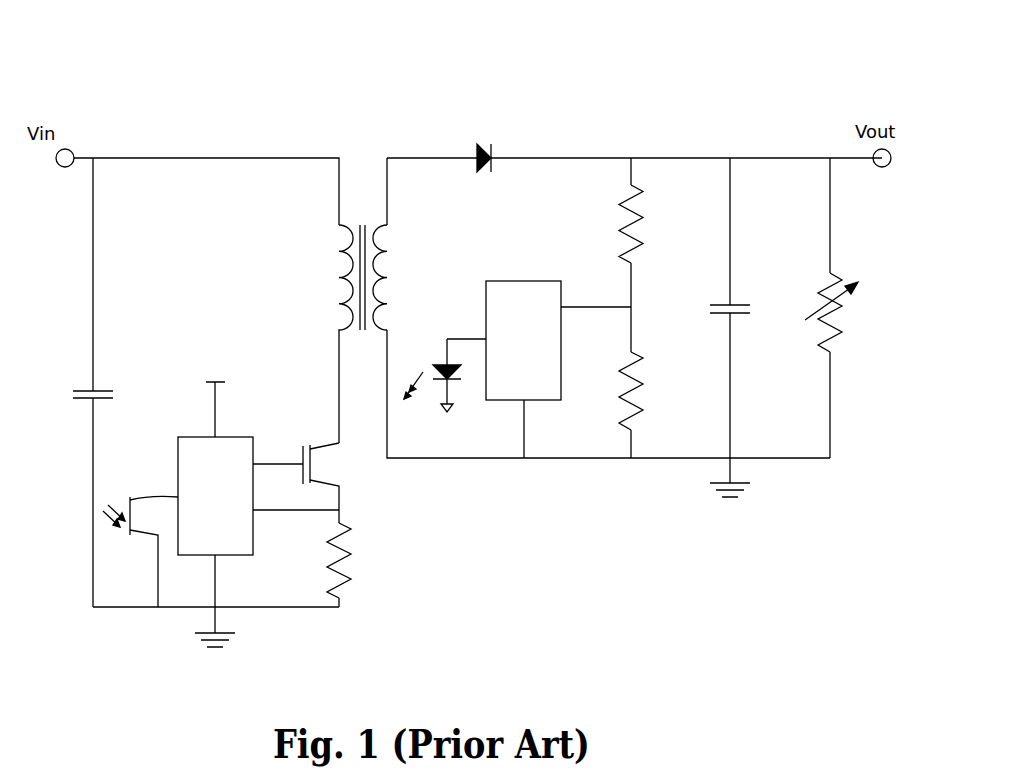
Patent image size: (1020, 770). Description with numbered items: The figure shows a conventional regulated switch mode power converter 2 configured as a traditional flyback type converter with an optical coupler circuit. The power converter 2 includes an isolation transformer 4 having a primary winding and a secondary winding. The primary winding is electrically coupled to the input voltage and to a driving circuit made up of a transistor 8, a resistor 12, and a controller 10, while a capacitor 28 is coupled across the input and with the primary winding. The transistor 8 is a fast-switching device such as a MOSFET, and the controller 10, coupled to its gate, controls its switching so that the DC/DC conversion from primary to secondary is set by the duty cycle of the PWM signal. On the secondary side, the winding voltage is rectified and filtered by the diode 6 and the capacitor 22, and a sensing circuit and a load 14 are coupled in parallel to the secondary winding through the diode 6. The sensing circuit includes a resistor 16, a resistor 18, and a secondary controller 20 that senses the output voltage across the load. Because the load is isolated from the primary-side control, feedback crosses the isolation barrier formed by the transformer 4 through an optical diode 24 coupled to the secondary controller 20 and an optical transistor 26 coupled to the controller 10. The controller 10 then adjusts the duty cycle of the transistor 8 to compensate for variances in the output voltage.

The power converter 2 is at (687, 68).
The isolation transformer 4 is at (356, 185).
The diode 6 is at (488, 140).
The transistor 8 is at (303, 444).
The controller 10 is at (232, 437).
The resistor 12 is at (327, 565).
The load 14 is at (840, 306).
The resistor 16 is at (645, 240).
The resistor 18 is at (645, 405).
The secondary controller 20 is at (527, 281).
The capacitor 22 is at (740, 304).
The optical diode 24 is at (430, 363).
The optical transistor 26 is at (130, 497).
The capacitor 28 is at (73, 391).